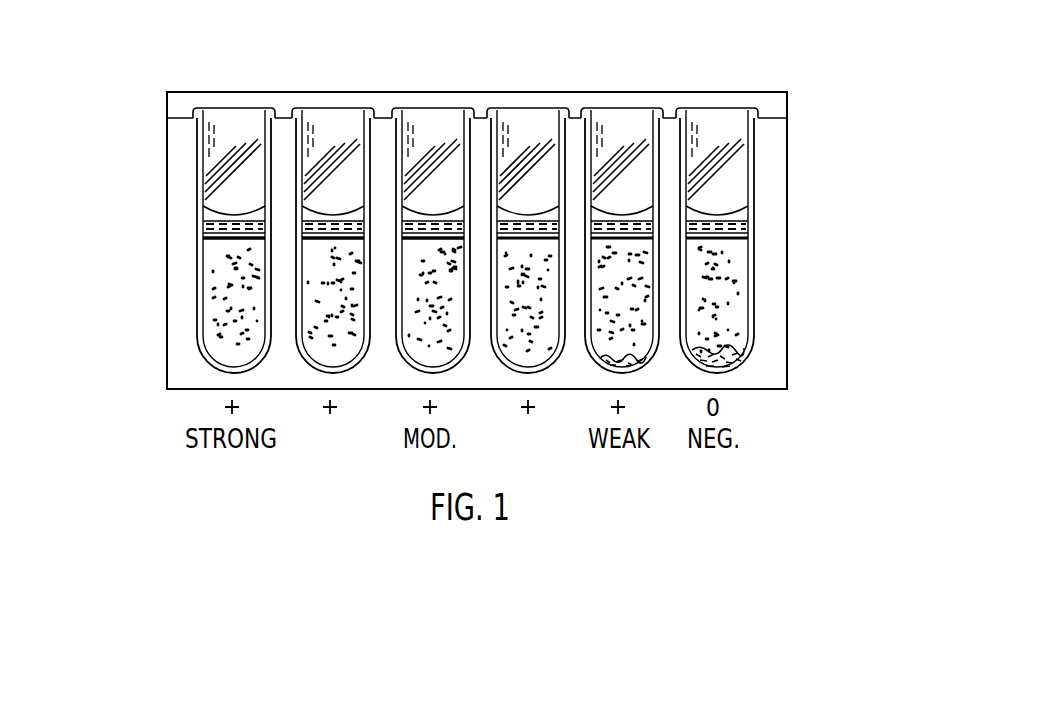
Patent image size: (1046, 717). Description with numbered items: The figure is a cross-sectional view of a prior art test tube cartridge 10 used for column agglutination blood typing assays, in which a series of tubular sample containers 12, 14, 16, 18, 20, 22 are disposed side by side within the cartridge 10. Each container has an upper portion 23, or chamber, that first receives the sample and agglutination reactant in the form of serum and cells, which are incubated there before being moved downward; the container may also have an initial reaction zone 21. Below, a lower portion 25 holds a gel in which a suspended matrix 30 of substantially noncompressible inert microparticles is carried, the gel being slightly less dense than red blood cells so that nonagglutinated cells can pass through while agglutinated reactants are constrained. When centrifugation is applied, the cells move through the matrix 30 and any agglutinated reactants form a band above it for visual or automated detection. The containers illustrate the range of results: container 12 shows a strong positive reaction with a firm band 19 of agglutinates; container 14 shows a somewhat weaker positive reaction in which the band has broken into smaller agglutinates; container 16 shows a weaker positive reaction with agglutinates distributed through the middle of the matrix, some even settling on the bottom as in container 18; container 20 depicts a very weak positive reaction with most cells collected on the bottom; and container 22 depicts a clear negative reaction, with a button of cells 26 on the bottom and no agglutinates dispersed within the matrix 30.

The cartridge 10 is at (116, 70).
The tubular sample container 12 is at (471, 220).
The tubular sample container 14 is at (331, 124).
The tubular sample container 16 is at (431, 124).
The tubular sample container 18 is at (527, 124).
The tubular sample container 20 is at (620, 124).
The tubular sample container 22 is at (753, 229).
The upper portion 23 is at (742, 197).
The initial reaction zone 21 is at (742, 226).
The firm band of agglutinates 19 is at (205, 237).
The suspended matrix 30 is at (217, 338).
The lower portion 25 is at (742, 320).
The button of cells 26 is at (742, 360).